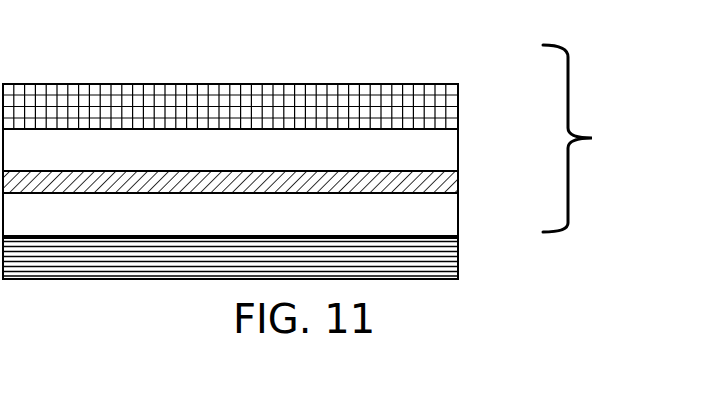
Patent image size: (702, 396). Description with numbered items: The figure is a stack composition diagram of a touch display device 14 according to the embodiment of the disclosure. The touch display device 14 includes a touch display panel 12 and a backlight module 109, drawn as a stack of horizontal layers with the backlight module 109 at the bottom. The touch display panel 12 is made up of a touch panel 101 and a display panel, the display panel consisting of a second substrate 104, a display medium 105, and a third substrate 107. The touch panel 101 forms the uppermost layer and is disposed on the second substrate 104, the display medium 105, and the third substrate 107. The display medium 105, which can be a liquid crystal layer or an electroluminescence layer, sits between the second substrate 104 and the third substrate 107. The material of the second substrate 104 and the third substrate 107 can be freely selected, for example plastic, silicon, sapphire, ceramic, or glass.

The touch display device 14 is at (58, 62).
The touch display panel 12 is at (587, 138).
The touch panel 101 is at (413, 110).
The second substrate 104 is at (435, 153).
The display medium 105 is at (445, 183).
The third substrate 107 is at (433, 218).
The backlight module 109 is at (458, 258).